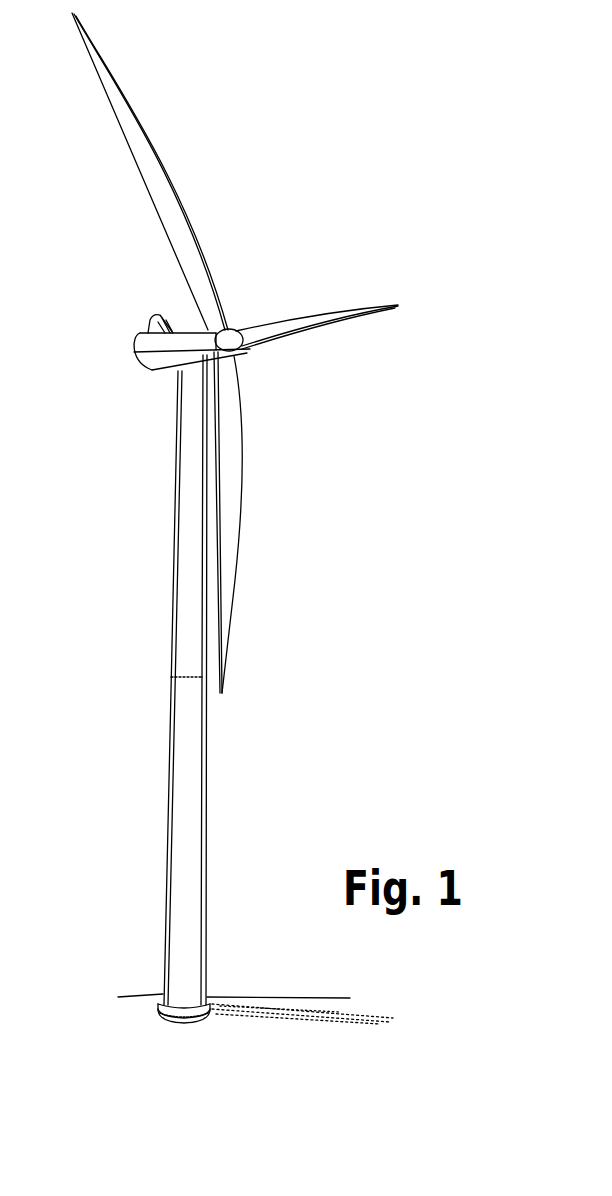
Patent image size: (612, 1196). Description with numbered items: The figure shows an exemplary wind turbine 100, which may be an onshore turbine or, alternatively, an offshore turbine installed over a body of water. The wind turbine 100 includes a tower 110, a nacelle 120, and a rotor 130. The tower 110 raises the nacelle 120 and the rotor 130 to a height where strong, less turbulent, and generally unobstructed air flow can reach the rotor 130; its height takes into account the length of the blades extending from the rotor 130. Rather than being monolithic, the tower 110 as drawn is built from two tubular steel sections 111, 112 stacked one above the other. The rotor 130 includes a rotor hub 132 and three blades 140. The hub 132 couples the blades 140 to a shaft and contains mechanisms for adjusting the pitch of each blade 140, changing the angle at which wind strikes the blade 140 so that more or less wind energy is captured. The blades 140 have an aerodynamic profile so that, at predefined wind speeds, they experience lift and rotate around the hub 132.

The wind turbine 100 is at (342, 213).
The tower 110 is at (171, 568).
The tubular steel section 111 is at (168, 830).
The tubular steel section 112 is at (176, 503).
The nacelle 120 is at (126, 352).
The rotor 130 is at (240, 353).
The rotor hub 132 is at (230, 330).
The blade 140 is at (104, 90).